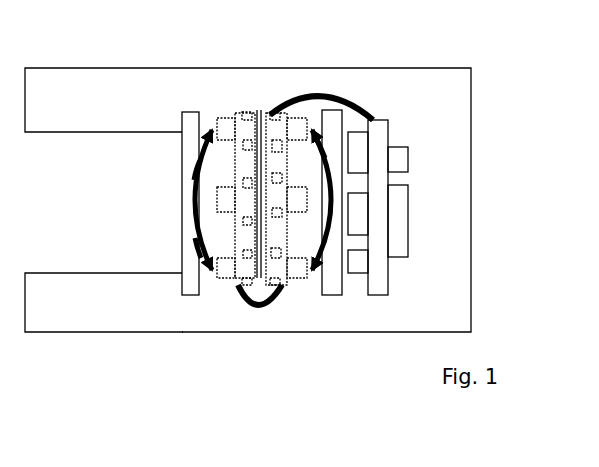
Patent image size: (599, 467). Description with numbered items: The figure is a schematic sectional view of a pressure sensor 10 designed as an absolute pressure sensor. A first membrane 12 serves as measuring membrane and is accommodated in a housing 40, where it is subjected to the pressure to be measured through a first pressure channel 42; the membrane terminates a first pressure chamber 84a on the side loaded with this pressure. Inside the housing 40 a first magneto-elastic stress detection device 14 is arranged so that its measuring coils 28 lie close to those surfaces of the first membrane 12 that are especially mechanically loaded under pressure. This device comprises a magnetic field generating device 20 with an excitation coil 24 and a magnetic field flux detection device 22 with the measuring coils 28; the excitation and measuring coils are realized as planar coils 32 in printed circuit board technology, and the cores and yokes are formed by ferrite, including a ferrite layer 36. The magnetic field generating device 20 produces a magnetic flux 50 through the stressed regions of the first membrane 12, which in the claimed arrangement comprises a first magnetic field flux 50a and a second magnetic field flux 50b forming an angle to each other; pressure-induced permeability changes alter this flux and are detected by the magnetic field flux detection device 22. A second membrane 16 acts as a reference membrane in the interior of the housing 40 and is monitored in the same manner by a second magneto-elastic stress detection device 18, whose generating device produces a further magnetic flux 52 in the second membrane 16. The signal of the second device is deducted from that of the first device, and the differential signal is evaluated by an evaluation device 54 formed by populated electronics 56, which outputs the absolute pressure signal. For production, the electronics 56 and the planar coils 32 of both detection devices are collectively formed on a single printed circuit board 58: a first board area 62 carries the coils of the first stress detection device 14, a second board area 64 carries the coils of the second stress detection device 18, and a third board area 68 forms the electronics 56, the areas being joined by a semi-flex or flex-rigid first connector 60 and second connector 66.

The pressure sensor 10 is at (534, 309).
The first membrane 12 is at (181, 113).
The first magneto-elastic stress detection device 14 is at (242, 310).
The second membrane 16 is at (336, 120).
The second magneto-elastic stress detection device 18 is at (292, 298).
The magnetic field generating device 20 is at (200, 197).
The magnetic field flux detection device 22 is at (224, 130).
The excitation coil 24 is at (247, 222).
The measuring coil 28 is at (249, 115).
The planar coils 32 is at (272, 290).
The ferrite layer 36 is at (273, 113).
The housing 40 is at (443, 68).
The first pressure channel 42 is at (130, 255).
The magnetic flux 50 is at (193, 147).
The first magnetic field flux 50a is at (199, 252).
The second magnetic field flux 50b is at (200, 173).
The further magnetic flux 52 is at (330, 150).
The evaluation device 54 is at (412, 231).
The populated electronics 56 is at (383, 253).
The printed circuit board 58 is at (377, 283).
The first connector 60 is at (256, 312).
The first board area 62 is at (241, 113).
The second board area 64 is at (285, 145).
The second connector 66 is at (318, 118).
The third board area 68 is at (390, 272).
The first pressure chamber 84a is at (96, 220).